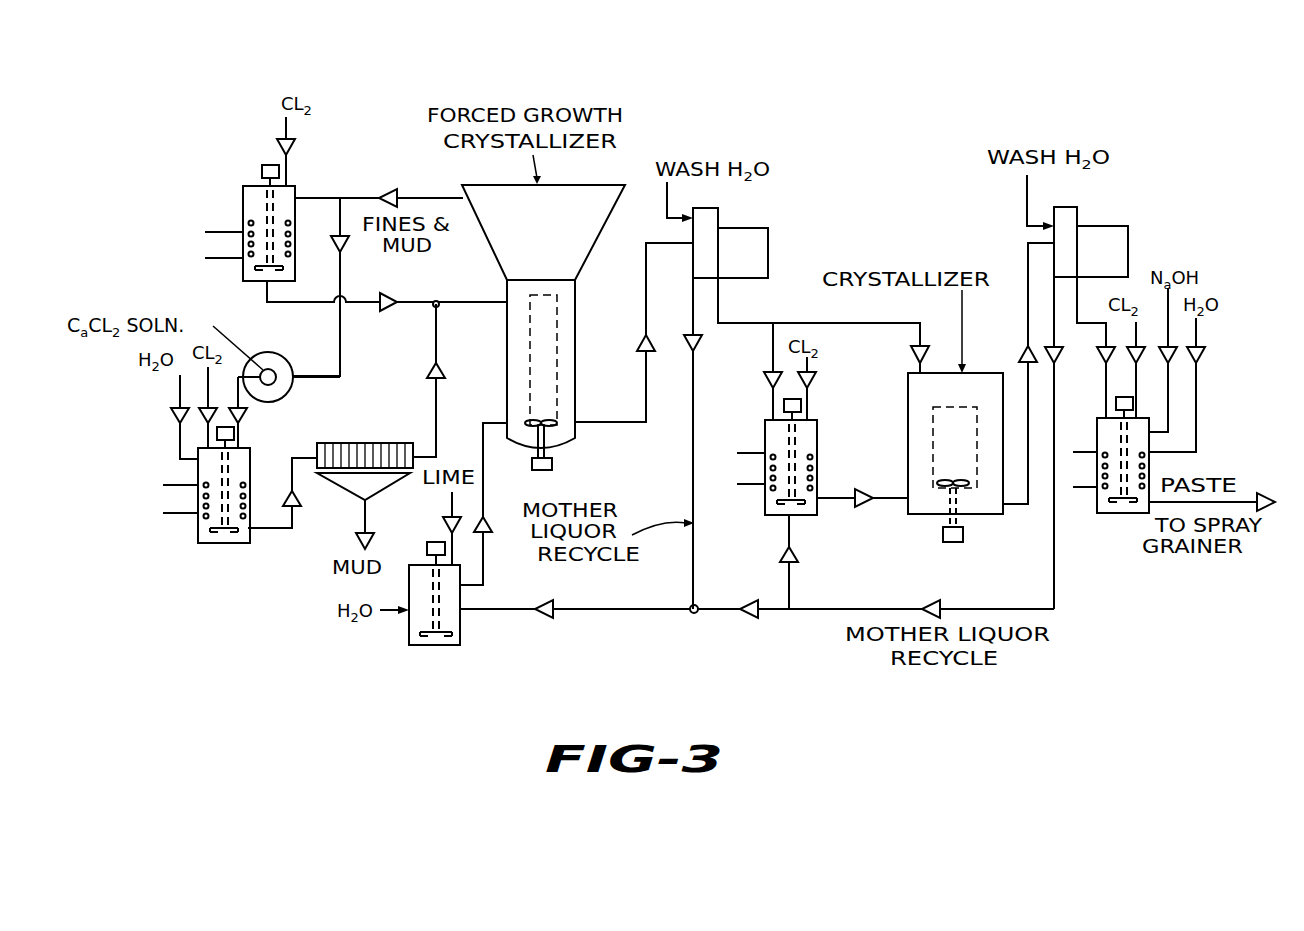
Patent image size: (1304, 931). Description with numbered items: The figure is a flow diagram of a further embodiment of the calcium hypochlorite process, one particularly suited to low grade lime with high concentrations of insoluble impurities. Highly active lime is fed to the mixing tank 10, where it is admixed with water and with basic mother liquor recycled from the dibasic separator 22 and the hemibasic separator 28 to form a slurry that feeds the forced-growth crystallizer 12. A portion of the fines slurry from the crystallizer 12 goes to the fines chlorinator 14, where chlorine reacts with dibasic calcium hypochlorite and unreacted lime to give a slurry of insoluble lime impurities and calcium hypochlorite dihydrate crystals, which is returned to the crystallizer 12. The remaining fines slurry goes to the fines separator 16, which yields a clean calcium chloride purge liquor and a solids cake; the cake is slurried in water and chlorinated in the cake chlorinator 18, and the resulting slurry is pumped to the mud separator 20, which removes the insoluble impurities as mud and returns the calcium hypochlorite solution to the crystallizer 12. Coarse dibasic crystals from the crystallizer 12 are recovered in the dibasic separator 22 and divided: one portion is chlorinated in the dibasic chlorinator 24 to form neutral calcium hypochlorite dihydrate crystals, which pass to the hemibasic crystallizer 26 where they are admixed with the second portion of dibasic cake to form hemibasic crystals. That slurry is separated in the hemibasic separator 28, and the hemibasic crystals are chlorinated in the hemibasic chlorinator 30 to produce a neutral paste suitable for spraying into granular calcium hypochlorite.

The mixing tank 10 is at (408, 620).
The forced-growth crystallizer 12 is at (577, 325).
The fines chlorinator 14 is at (296, 190).
The fines separator 16 is at (287, 396).
The cake chlorinator 18 is at (228, 546).
The mud separator 20 is at (375, 443).
The dibasic separator 22 is at (768, 228).
The dibasic chlorinator 24 is at (818, 447).
The hemibasic crystallizer 26 is at (985, 516).
The hemibasic separator 28 is at (1128, 226).
The hemibasic chlorinator 30 is at (1115, 516).